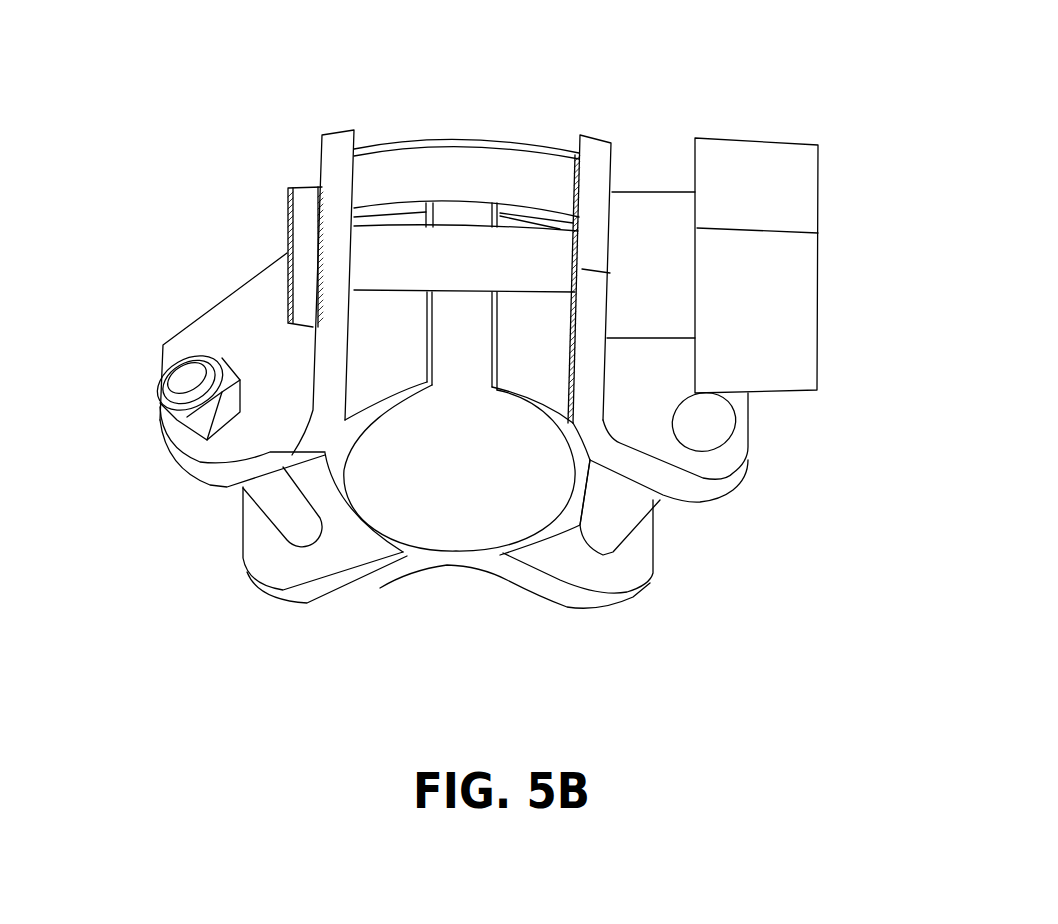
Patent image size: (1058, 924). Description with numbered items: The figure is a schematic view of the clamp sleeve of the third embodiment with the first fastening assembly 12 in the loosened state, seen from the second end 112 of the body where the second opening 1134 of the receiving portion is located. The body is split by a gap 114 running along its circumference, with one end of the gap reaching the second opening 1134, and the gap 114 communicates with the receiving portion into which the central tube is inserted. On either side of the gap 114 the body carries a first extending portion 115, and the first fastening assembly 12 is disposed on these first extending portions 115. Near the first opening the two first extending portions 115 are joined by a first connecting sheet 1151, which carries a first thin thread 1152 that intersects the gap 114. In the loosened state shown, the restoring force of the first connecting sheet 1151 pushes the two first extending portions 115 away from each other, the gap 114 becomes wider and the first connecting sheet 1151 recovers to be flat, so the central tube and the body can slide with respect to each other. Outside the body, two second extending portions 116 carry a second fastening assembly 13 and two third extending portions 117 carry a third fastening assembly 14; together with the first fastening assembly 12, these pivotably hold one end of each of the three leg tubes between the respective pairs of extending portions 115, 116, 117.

The first fastening assembly 12 is at (288, 237).
The second fastening assembly 13 is at (160, 397).
The third fastening assembly 14 is at (718, 432).
The second end 112 is at (427, 562).
The gap 114 is at (460, 215).
The first extending portion 115 is at (340, 150).
The second extending portion 116 is at (225, 452).
The third extending portion 117 is at (680, 487).
The second opening 1134 is at (481, 550).
The first connecting sheet 1151 is at (522, 167).
The first thin thread 1152 is at (430, 207).